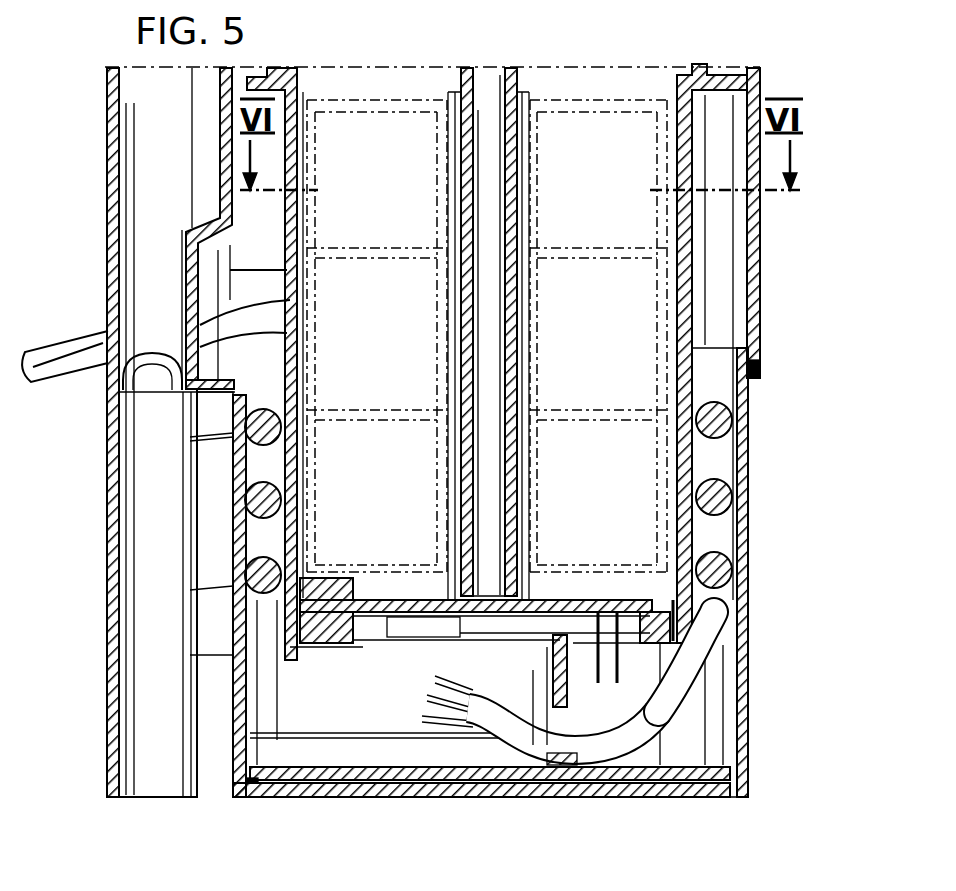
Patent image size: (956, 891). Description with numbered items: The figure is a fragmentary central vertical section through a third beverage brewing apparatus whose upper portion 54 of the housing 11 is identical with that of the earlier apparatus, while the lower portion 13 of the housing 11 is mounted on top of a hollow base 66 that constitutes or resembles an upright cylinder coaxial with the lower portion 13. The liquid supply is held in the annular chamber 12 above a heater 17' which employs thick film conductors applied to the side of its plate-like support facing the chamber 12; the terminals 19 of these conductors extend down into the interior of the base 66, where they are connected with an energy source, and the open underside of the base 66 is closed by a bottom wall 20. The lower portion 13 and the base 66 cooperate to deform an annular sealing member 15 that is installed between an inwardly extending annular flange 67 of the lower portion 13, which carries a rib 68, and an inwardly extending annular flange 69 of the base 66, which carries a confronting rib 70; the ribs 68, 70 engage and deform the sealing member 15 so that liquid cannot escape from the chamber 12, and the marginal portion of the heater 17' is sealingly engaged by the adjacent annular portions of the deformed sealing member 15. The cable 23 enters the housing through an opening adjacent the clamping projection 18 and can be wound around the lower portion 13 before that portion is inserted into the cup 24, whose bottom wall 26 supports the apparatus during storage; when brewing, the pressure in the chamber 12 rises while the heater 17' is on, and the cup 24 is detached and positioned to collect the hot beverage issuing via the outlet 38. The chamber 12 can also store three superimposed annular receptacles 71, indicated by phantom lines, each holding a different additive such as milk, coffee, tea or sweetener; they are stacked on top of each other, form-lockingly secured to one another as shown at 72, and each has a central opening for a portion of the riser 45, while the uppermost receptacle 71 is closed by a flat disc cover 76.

The housing 11 is at (768, 320).
The chamber 12 is at (302, 133).
The lower portion of the housing 13 is at (683, 531).
The sealing member 15 is at (287, 636).
The heater 17' is at (485, 573).
The clamping projection 18 is at (551, 678).
The terminals 19 is at (600, 695).
The bottom wall 20 is at (450, 781).
The cable 23 is at (687, 680).
The cup 24 is at (756, 660).
The bottom wall of the cup 26 is at (355, 798).
The outlet 38 is at (108, 376).
The riser 45 is at (514, 320).
The upper portion of the housing 54 is at (758, 202).
The base 66 is at (247, 787).
The flange of the lower portion 67 is at (333, 577).
The rib of the lower portion 68 is at (356, 575).
The flange of the base 69 is at (335, 644).
The rib of the base 70 is at (348, 644).
The receptacles 71 is at (593, 165).
The form-locking connection of the receptacles 72 is at (660, 218).
The cover 76 is at (390, 108).